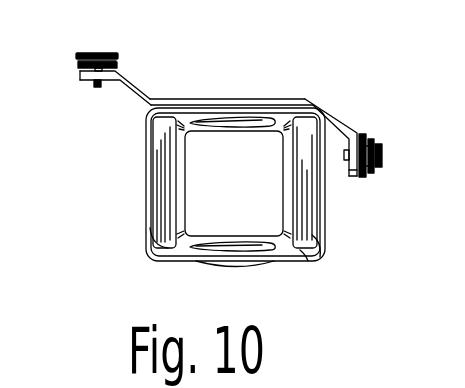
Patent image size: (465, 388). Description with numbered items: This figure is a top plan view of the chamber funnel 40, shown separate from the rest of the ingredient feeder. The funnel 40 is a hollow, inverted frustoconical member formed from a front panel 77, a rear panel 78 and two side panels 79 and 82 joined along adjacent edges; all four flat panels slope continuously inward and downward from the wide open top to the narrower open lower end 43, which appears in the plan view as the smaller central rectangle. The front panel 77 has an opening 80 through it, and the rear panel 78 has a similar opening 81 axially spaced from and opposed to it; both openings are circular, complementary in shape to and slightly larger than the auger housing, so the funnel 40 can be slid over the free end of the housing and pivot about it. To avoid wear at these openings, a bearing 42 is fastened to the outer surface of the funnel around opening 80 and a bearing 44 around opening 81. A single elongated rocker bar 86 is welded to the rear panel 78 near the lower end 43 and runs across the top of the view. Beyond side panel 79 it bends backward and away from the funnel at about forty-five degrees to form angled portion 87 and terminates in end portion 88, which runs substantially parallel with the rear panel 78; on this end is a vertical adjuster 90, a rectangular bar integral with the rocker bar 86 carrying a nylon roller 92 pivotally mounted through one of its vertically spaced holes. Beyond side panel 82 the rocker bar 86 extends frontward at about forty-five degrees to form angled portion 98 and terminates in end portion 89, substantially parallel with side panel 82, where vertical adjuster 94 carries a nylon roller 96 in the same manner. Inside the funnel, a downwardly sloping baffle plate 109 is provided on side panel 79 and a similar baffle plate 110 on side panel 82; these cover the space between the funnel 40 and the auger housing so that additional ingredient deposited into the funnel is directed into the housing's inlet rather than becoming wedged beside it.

The chamber funnel 40 is at (343, 250).
The bearing 42 is at (214, 267).
The lower end 43 is at (186, 213).
The bearing 44 is at (232, 116).
The front panel 77 is at (307, 263).
The rear panel 78 is at (298, 104).
The side panel 79 is at (147, 175).
The opening 80 is at (272, 250).
The opening 81 is at (264, 118).
The side panel 82 is at (326, 210).
The rocker bar 86 is at (186, 92).
The angled portion 87 is at (128, 92).
The end portion 88 is at (80, 74).
The end portion 89 is at (364, 133).
The vertical adjuster 90 is at (97, 88).
The nylon roller 92 is at (87, 52).
The vertical adjuster 94 is at (353, 180).
The nylon roller 96 is at (381, 141).
The angled portion 98 is at (336, 116).
The baffle plate 109 is at (149, 228).
The baffle plate 110 is at (316, 257).